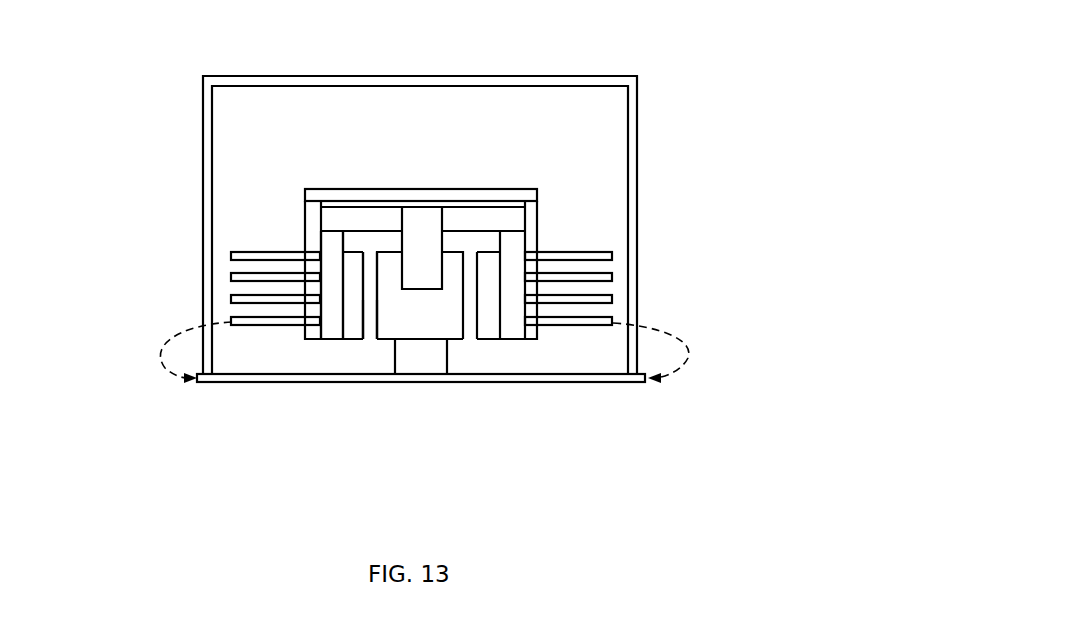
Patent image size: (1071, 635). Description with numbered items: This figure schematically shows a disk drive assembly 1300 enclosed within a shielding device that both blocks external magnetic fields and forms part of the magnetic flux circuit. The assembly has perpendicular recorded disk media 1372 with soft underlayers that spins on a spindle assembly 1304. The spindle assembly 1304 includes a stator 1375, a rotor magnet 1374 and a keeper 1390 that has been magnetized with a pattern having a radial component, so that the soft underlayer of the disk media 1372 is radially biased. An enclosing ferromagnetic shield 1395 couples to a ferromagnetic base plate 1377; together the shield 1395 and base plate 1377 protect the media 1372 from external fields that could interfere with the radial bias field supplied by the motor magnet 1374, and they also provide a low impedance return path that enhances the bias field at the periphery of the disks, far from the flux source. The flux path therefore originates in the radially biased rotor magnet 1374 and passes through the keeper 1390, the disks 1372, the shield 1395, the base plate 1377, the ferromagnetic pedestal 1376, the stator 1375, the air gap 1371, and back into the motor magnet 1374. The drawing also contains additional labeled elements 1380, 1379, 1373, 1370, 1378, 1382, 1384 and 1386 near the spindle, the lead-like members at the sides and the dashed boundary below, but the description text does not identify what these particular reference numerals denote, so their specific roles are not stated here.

The disk drive assembly 1300 is at (108, 50).
The shield 1395 is at (603, 77).
The cap 1380 is at (493, 188).
The protrusion 1379 is at (423, 217).
The air gap 1371 is at (370, 256).
The keeper 1390 is at (330, 243).
The first column 1373 is at (352, 330).
The rotor magnet 1374 is at (371, 333).
The stator 1375 is at (453, 328).
The ferromagnetic pedestal 1376 is at (427, 363).
The base plate 1377 is at (278, 382).
The disk media 1372 is at (258, 331).
The spindle assembly 1304 is at (483, 357).
The dashed boundary 1370 is at (163, 337).
The leads 1378 is at (533, 332).
The first lead 1382 is at (613, 256).
The second lead 1384 is at (613, 278).
The third lead 1386 is at (613, 300).